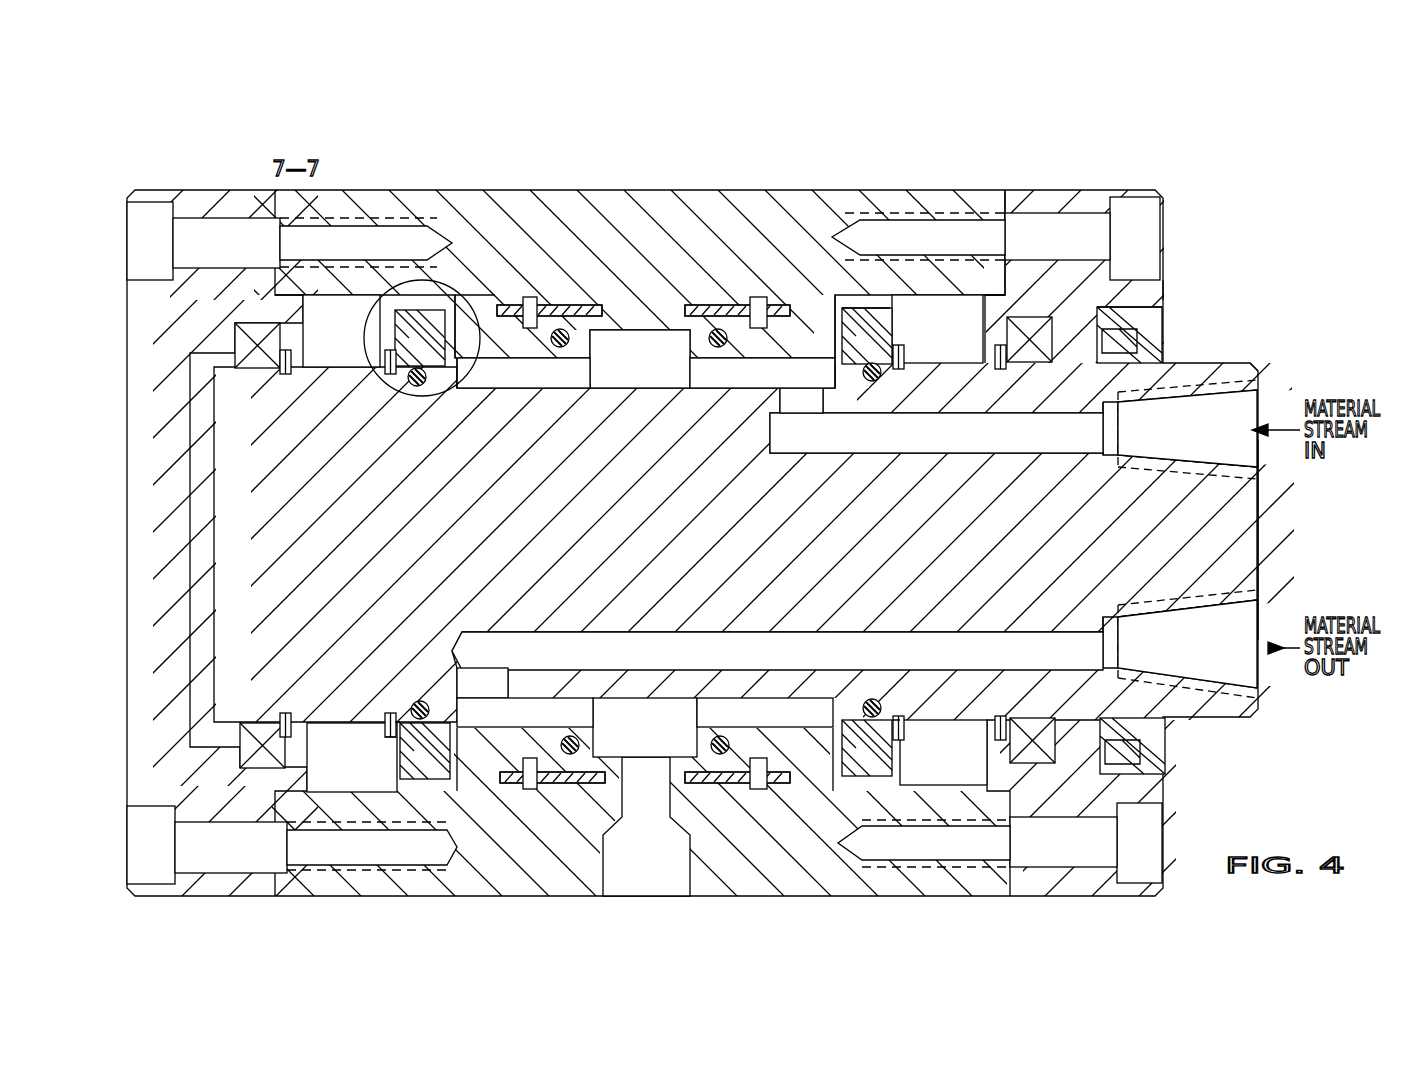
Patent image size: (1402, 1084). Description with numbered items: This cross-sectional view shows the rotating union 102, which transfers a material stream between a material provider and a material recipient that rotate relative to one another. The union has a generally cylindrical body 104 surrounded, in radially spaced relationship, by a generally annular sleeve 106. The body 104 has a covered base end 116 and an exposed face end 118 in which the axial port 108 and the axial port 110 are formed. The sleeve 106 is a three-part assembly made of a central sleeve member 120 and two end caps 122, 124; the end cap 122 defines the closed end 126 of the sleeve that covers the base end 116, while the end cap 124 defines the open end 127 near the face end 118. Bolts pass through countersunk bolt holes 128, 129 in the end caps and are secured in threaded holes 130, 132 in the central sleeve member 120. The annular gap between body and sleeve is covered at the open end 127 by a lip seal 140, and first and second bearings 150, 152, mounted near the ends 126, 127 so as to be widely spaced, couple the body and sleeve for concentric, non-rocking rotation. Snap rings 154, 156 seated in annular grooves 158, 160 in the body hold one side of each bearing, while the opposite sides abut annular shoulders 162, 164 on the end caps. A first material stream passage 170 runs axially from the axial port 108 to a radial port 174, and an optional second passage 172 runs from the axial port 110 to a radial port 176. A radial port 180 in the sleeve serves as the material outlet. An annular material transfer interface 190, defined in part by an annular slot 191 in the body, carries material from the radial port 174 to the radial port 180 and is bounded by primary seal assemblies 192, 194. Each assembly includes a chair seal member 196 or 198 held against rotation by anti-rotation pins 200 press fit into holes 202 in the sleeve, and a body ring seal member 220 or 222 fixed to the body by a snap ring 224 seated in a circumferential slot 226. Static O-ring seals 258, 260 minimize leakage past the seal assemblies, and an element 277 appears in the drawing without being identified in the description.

The rotating union 102 is at (1198, 168).
The body 104 is at (1210, 362).
The sleeve 106 is at (414, 182).
The axial port 108 is at (1188, 422).
The axial port 110 is at (1193, 640).
The covered base end 116 is at (190, 505).
The exposed face end 118 is at (1260, 520).
The central sleeve member 120 is at (680, 190).
The end cap 122 is at (203, 190).
The end cap 124 is at (1135, 190).
The closed end 126 is at (235, 340).
The open end 127 is at (1163, 285).
The countersunk bolt hole 128 is at (180, 190).
The countersunk bolt hole 129 is at (1090, 190).
The threaded hole 130 is at (270, 190).
The threaded hole 132 is at (950, 205).
The lip seal 140 is at (1163, 330).
The first bearing 150 is at (280, 362).
The second bearing 152 is at (1055, 300).
The snap ring 154 is at (273, 327).
The snap ring 156 is at (1067, 285).
The annular groove 158 is at (273, 367).
The annular groove 160 is at (1250, 368).
The annular shoulder 162 is at (385, 360).
The annular shoulder 164 is at (1052, 335).
The first material stream passage 170 is at (928, 449).
The second material stream passage 172 is at (813, 652).
The first radially-oriented port 174 is at (778, 411).
The second radially-oriented port 176 is at (463, 694).
The radially-oriented material stream port 180 is at (628, 874).
The annular material transfer interface 190 is at (667, 348).
The annular slot 191 is at (565, 386).
The dynamic seal assembly 192 is at (477, 362).
The dynamic seal assembly 194 is at (790, 363).
The chair seal member 196 is at (478, 300).
The chair seal member 198 is at (868, 363).
The anti-rotation pin 200 is at (465, 300).
The hole 202 is at (545, 305).
The body ring seal member 220 is at (405, 312).
The body ring seal member 222 is at (875, 330).
The snap ring 224 is at (395, 755).
The circumferential slot 226 is at (398, 723).
The static O-ring seal 258 is at (880, 362).
The static O-ring seal 260 is at (530, 297).
The cavity 277 is at (306, 337).